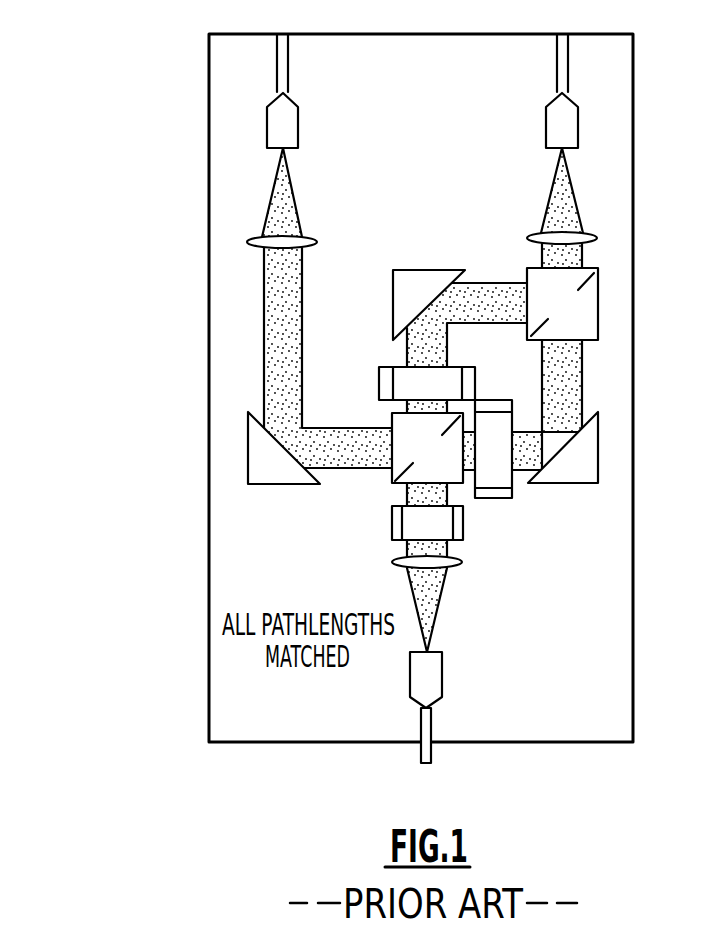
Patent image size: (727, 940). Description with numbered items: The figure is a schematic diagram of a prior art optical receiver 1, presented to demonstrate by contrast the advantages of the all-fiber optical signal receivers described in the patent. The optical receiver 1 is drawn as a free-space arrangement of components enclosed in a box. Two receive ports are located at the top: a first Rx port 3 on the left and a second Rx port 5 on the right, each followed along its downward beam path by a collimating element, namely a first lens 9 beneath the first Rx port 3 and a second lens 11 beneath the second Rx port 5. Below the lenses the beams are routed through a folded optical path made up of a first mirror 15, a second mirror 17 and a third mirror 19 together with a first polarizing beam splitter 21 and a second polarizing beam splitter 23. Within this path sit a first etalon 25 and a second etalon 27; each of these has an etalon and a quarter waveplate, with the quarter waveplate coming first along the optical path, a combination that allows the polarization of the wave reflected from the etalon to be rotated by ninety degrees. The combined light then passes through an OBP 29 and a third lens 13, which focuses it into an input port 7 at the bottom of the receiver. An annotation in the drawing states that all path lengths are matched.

The optical receiver 1 is at (88, 68).
The first Rx port 3 is at (270, 119).
The second Rx port 5 is at (576, 124).
The input port 7 is at (442, 672).
The first lens 9 is at (263, 238).
The second lens 11 is at (597, 238).
The third lens 13 is at (458, 563).
The first mirror 15 is at (280, 484).
The second mirror 17 is at (393, 305).
The third mirror 19 is at (596, 462).
The first polarizing beam splitter 21 is at (392, 420).
The second polarizing beam splitter 23 is at (598, 305).
The first etalon 25 is at (410, 382).
The second etalon 27 is at (507, 480).
The OBP 29 is at (463, 525).